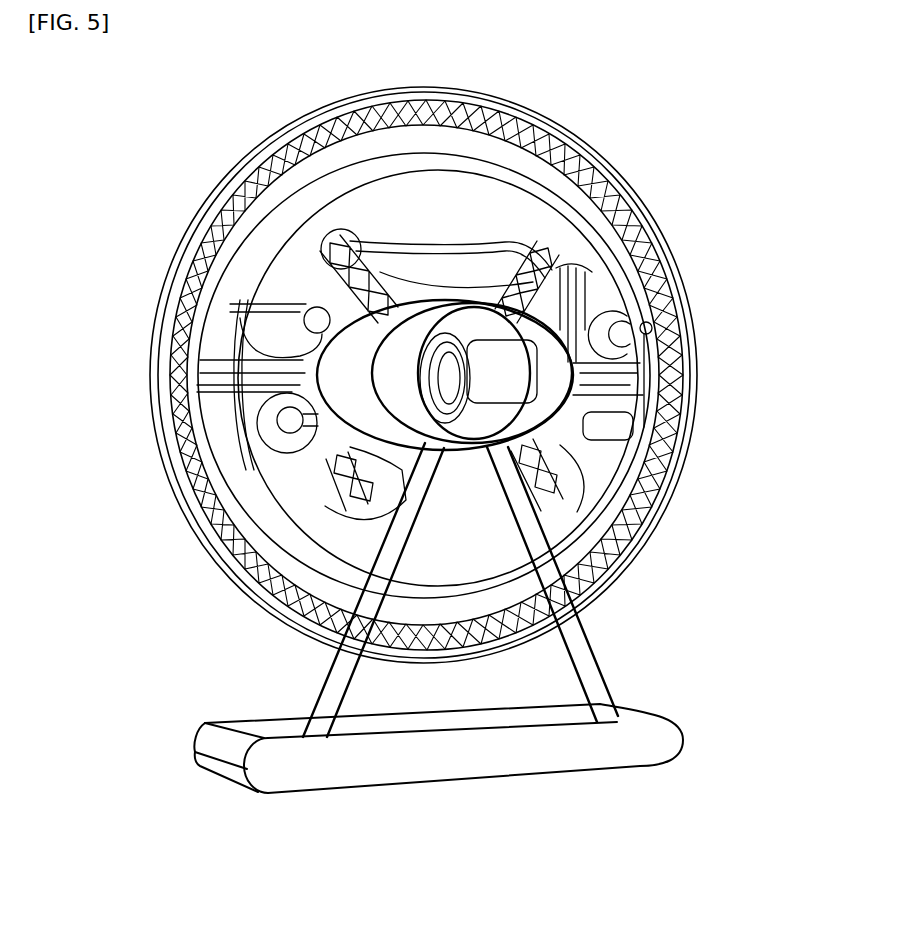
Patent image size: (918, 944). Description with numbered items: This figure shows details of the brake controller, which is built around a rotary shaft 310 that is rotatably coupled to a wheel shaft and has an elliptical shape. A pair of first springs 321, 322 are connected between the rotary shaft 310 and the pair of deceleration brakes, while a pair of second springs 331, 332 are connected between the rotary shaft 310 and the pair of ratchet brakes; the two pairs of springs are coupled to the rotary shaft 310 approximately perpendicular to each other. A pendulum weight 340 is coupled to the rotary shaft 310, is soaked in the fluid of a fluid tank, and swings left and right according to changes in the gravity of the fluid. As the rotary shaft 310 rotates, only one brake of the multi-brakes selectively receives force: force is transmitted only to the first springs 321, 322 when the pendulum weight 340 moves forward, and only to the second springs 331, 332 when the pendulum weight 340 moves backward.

The rotary shaft 310 is at (533, 430).
The first spring 321 is at (535, 282).
The first spring 322 is at (340, 485).
The second spring 331 is at (350, 285).
The second spring 332 is at (550, 497).
The pendulum weight 340 is at (642, 768).